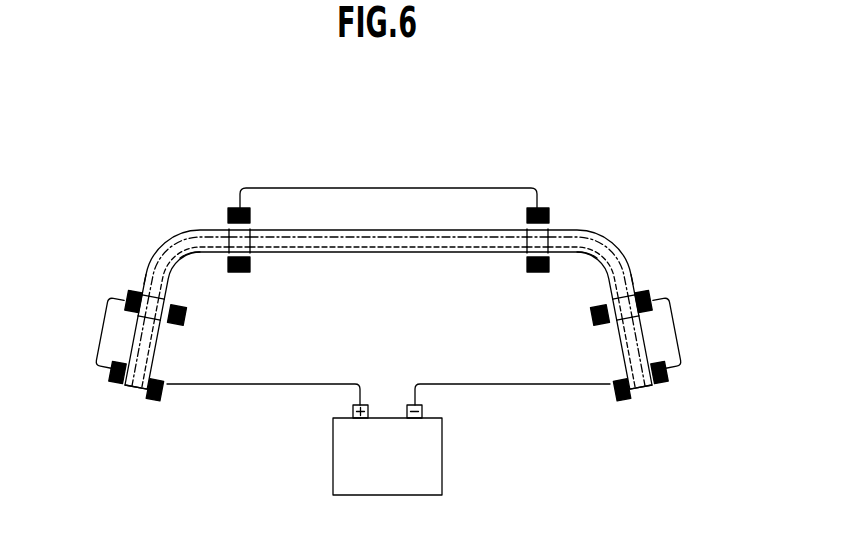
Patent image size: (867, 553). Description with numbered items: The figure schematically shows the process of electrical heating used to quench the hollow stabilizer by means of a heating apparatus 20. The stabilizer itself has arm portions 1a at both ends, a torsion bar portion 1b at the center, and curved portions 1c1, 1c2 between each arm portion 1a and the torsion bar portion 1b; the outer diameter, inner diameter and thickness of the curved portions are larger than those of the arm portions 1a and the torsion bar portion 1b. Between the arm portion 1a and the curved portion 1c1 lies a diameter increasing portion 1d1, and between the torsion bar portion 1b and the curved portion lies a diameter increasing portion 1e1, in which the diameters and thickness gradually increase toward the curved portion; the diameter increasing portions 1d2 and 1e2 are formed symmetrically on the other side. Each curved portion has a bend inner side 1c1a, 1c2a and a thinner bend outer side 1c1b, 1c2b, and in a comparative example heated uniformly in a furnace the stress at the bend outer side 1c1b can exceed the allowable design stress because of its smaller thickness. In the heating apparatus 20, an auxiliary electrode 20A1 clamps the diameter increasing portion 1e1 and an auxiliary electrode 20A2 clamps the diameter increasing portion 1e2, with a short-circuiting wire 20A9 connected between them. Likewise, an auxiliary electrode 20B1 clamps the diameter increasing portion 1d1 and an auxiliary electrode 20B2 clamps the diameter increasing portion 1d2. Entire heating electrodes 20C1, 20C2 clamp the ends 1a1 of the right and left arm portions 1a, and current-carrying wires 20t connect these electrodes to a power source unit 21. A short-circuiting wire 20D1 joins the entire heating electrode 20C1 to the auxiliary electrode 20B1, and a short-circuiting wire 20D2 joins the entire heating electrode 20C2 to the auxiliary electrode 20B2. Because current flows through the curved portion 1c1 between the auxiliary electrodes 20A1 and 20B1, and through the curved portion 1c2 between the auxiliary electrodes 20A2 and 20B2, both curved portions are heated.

The heating apparatus 20 is at (481, 141).
The short-circuiting wire 20A9 is at (387, 188).
The auxiliary electrode 20A1 is at (229, 208).
The auxiliary electrode 20A2 is at (548, 208).
The auxiliary electrode 20B1 is at (125, 297).
The auxiliary electrode 20B2 is at (652, 297).
The entire heating electrode 20C1 is at (109, 373).
The entire heating electrode 20C2 is at (668, 373).
The short-circuiting wire 20D1 is at (101, 336).
The short-circuiting wire 20D2 is at (676, 336).
The current-carrying wires 20t is at (255, 383).
The power source unit 21 is at (445, 457).
The arm portion 1a is at (167, 326).
The connecting portion (end of arm portion) 1a1 is at (137, 388).
The torsion bar portion 1b is at (519, 222).
The curved portion 1c1 is at (216, 205).
The bend inner side 1c1a is at (198, 255).
The bend outer side 1c1b is at (141, 269).
The curved portion 1c2 is at (647, 268).
The bend inner side 1c2a is at (579, 255).
The bend outer side 1c2b is at (636, 269).
The diameter increasing portion 1d1 is at (183, 304).
The diameter increasing portion 1d2 is at (594, 304).
The diameter increasing portion 1e1 is at (241, 240).
The diameter increasing portion 1e2 is at (536, 240).